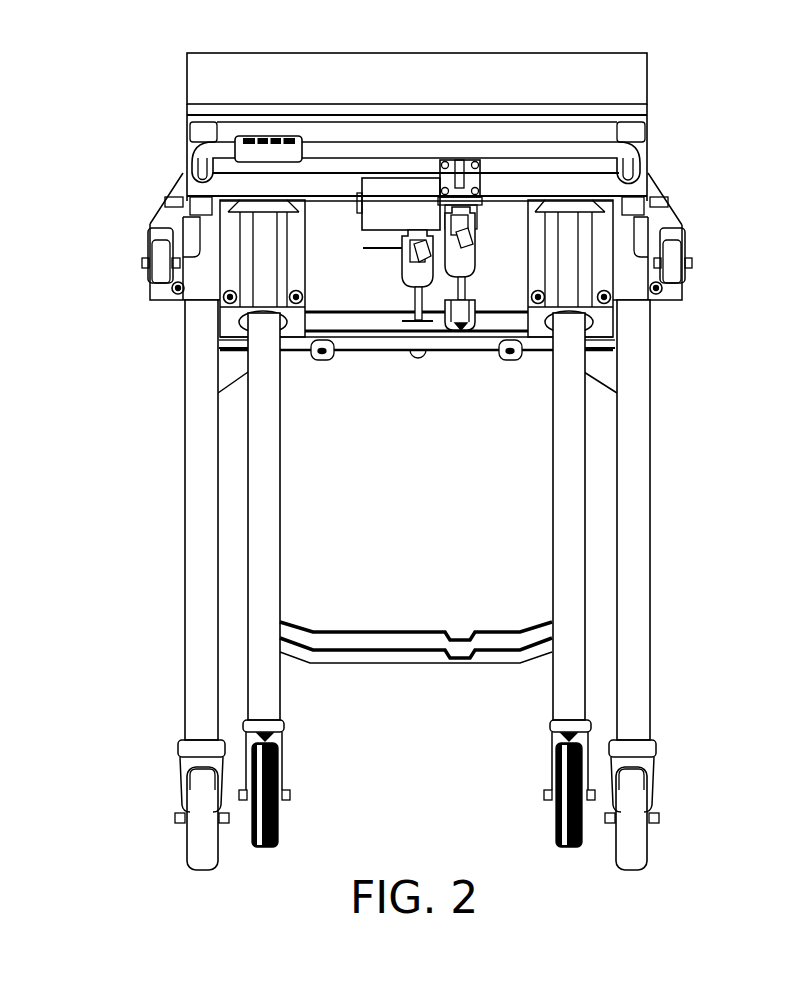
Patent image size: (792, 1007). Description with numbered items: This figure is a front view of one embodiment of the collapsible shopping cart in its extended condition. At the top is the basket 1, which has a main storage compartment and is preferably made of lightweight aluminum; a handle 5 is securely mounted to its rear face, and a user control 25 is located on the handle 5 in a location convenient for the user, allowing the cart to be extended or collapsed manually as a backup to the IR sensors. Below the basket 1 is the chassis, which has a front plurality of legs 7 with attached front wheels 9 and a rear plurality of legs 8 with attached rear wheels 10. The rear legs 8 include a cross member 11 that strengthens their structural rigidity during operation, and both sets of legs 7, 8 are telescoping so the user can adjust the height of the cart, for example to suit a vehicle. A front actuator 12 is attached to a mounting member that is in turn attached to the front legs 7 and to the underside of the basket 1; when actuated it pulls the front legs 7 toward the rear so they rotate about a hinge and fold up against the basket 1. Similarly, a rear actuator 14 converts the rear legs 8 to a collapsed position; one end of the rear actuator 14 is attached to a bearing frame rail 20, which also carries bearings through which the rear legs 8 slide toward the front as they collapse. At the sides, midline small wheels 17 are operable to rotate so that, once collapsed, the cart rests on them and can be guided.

The basket 1 is at (650, 67).
The handle 5 is at (198, 158).
The front plurality of legs 7 is at (652, 503).
The rear plurality of legs 8 is at (552, 693).
The front wheels 9 is at (653, 861).
The rear wheels 10 is at (577, 851).
The cross member 11 is at (399, 666).
The front actuator 12 is at (468, 332).
The rear actuator 14 is at (416, 304).
The midline small wheels 17 is at (690, 232).
The bearing frame rail 20 is at (369, 353).
The user control 25 is at (236, 140).